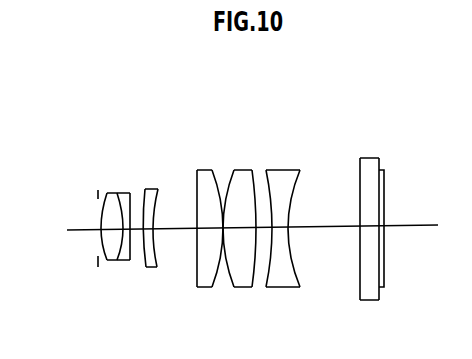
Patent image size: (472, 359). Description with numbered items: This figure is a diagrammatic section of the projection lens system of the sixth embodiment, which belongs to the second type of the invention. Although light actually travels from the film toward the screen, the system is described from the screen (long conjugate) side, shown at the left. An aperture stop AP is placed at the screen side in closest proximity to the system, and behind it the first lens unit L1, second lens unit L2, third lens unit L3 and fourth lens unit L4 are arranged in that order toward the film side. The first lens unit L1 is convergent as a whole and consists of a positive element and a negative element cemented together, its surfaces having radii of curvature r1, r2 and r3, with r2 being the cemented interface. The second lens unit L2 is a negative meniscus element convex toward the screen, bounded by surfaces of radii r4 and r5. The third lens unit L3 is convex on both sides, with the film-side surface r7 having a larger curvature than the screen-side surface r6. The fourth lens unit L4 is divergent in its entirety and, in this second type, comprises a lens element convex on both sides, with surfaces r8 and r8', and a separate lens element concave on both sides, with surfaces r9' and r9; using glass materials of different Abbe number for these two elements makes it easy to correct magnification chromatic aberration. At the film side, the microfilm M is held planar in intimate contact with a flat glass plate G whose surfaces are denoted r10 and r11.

The radius of curvature r1 is at (102, 218).
The radius of curvature r2 is at (120, 197).
The radius of curvature r3 is at (133, 189).
The radius of curvature r4 is at (146, 194).
The radius of curvature r5 is at (155, 197).
The radius of curvature r6 is at (197, 177).
The radius of curvature r7 is at (217, 169).
The radius of curvature r8 is at (244, 209).
The radius of curvature r8' is at (278, 189).
The radius of curvature r9' is at (289, 209).
The radius of curvature r9 is at (309, 228).
The radius of curvature r10 is at (359, 168).
The radius of curvature r11 is at (379, 164).
The aperture stop AP is at (97, 259).
The first lens unit L1 is at (101, 249).
The second lens unit L2 is at (164, 249).
The third lens unit L3 is at (238, 213).
The fourth lens unit L4 is at (281, 233).
The flat glass plate G is at (378, 233).
The microfilm M is at (385, 275).